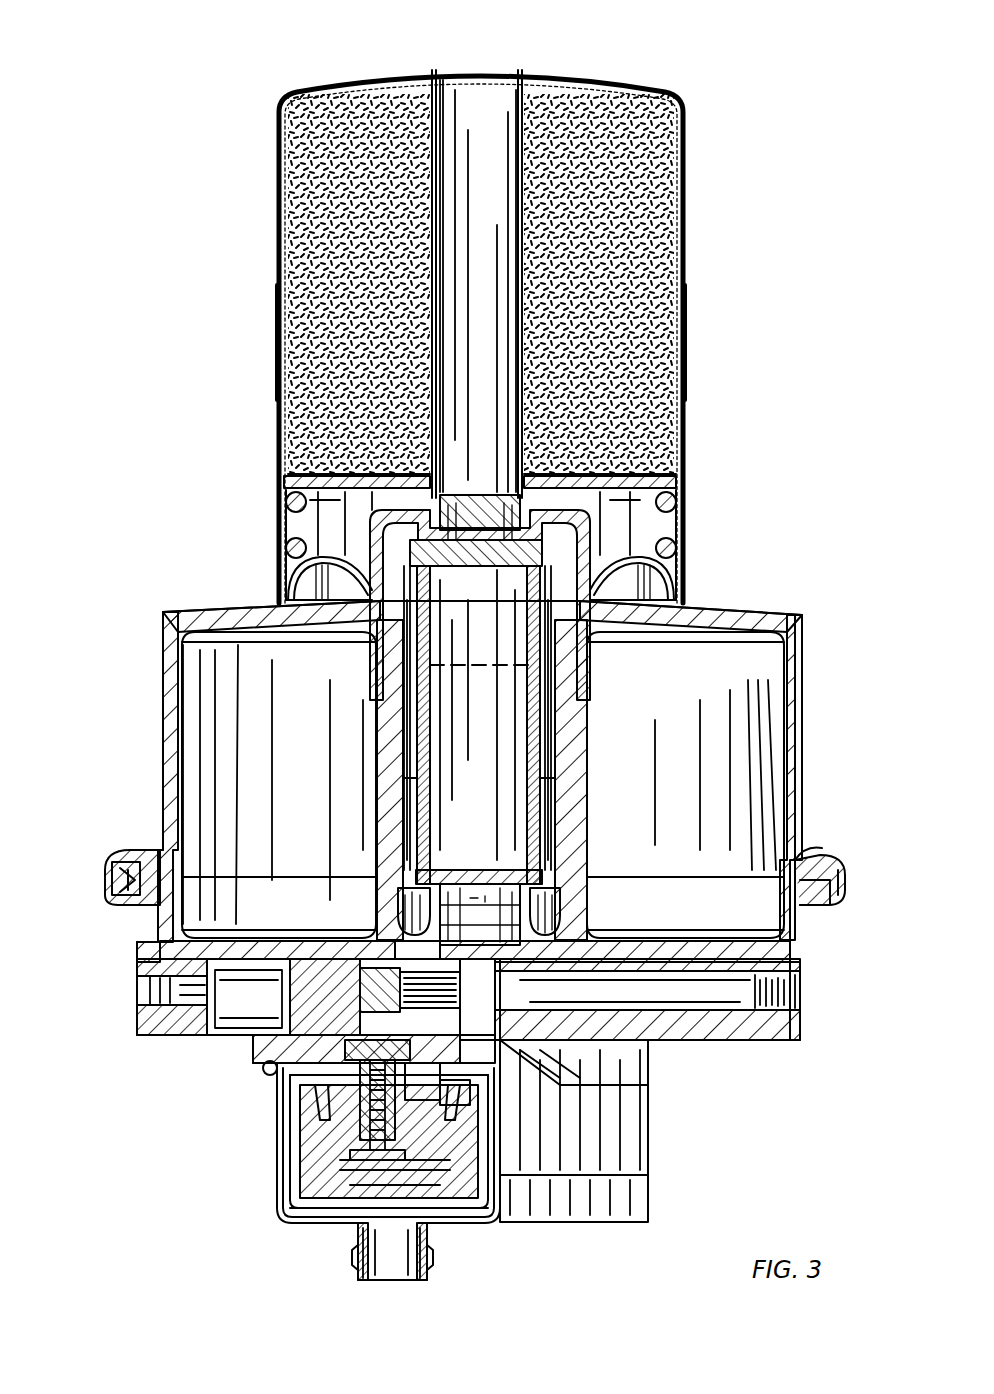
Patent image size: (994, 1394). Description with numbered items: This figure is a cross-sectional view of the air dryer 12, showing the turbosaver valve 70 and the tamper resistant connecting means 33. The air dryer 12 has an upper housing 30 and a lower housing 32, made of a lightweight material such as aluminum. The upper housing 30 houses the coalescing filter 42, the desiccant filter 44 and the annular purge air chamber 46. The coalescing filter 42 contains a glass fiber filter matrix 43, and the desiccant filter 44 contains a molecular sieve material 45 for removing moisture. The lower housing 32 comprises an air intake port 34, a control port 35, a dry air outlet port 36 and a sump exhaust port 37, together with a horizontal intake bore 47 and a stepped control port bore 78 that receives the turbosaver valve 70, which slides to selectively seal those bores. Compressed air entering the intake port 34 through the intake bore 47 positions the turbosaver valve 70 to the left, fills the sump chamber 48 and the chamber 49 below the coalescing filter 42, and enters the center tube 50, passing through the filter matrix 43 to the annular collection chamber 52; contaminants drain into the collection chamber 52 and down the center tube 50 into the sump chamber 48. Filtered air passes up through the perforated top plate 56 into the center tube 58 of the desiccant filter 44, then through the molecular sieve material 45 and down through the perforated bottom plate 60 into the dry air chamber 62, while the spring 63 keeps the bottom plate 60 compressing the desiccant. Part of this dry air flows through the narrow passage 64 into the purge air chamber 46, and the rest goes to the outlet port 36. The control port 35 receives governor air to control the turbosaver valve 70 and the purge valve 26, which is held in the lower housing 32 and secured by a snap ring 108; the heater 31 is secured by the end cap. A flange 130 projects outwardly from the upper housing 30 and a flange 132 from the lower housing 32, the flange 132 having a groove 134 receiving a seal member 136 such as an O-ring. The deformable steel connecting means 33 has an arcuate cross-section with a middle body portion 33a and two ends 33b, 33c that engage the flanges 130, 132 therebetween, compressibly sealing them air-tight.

The air dryer 12 is at (774, 106).
The purge valve 26 is at (345, 1100).
The upper housing 30 is at (800, 718).
The heater 31 is at (275, 1075).
The lower housing 32 is at (795, 944).
The connecting means 33 is at (832, 866).
The middle body portion 33a is at (846, 880).
The end 33b is at (805, 852).
The end 33c is at (828, 910).
The air intake port 34 is at (800, 990).
The control port 35 is at (145, 987).
The dry air outlet port 36 is at (572, 1225).
The sump exhaust port 37 is at (390, 1280).
The coalescing filter 42 is at (585, 682).
The filter matrix 43 is at (425, 706).
The desiccant filter 44 is at (686, 213).
The molecular sieve material 45 is at (660, 254).
The purge air chamber 46 is at (245, 765).
The intake bore 47 is at (705, 1000).
The sump chamber 48 is at (480, 1098).
The chamber 49 is at (490, 930).
The center tube 50 is at (470, 738).
The collection chamber 52 is at (395, 905).
The perforated top plate 56 is at (545, 545).
The center tube 58 is at (498, 86).
The perforated bottom plate 60 is at (683, 483).
The dry air chamber 62 is at (335, 512).
The spring 63 is at (682, 503).
The passage 64 is at (330, 606).
The turbosaver valve 70 is at (300, 1042).
The control port bore 78 is at (235, 1023).
The snap ring 108 is at (290, 1223).
The flange 130 is at (152, 850).
The flange 132 is at (132, 908).
The groove 134 is at (125, 905).
The seal member 136 is at (140, 860).